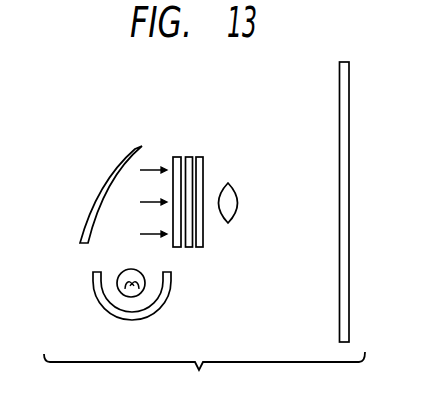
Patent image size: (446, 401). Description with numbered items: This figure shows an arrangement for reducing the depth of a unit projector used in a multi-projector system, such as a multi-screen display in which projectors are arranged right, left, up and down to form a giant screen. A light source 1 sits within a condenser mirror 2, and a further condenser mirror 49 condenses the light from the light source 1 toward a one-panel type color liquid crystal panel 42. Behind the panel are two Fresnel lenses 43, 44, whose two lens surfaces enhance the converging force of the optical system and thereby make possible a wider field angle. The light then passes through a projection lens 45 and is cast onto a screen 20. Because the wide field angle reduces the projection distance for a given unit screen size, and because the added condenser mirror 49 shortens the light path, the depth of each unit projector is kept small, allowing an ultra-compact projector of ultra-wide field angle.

The light source 1 is at (122, 275).
The condenser mirror 2 is at (172, 283).
The screen 20 is at (349, 97).
The color liquid crystal panel 42 is at (175, 157).
The Fresnel lens 43 is at (189, 157).
The Fresnel lens 44 is at (200, 157).
The projection lens 45 is at (229, 184).
The condenser mirror 49 is at (116, 163).